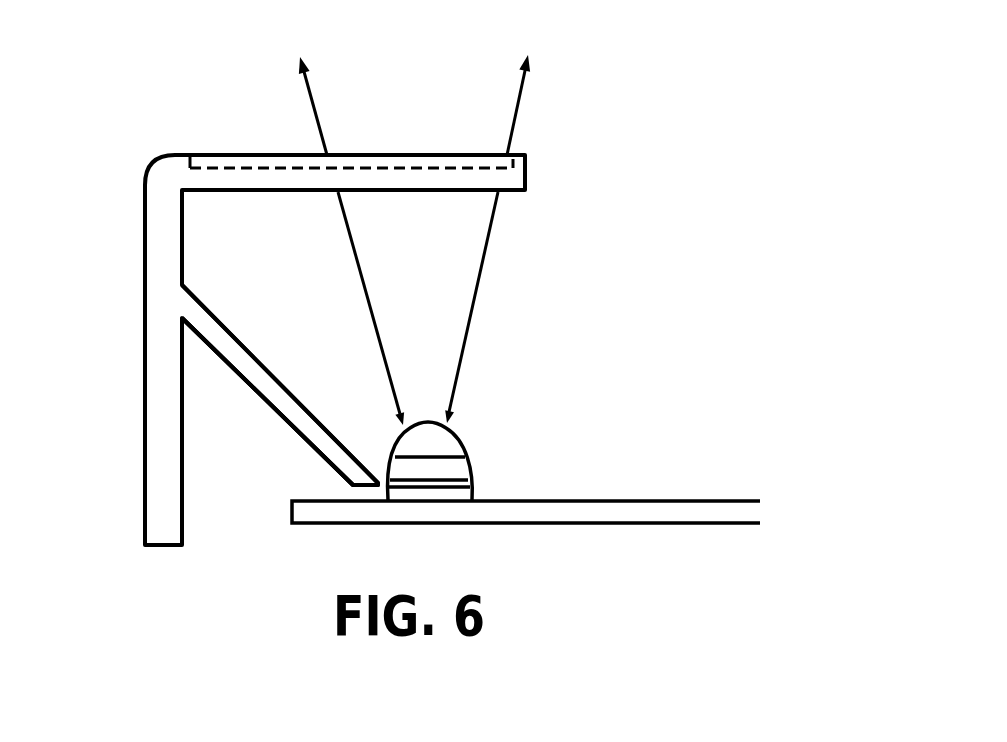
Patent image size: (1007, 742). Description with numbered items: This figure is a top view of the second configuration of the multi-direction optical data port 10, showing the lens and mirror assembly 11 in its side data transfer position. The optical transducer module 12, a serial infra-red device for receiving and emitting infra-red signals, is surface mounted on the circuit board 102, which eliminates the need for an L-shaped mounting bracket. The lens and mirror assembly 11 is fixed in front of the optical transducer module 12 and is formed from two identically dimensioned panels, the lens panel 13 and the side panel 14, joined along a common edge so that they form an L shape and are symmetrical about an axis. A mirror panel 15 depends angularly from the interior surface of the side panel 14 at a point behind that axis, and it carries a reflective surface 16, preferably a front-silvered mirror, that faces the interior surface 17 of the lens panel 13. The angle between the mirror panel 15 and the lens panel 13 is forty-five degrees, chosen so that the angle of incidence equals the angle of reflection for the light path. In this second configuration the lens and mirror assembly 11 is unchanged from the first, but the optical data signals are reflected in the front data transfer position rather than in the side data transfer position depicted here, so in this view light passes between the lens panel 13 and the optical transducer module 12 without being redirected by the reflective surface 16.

The multi-direction optical data port 10 is at (650, 245).
The lens and mirror assembly 11 is at (135, 232).
The optical transducer module 12 is at (462, 468).
The lens panel 13 is at (420, 156).
The side panel 14 is at (145, 405).
The mirror panel 15 is at (265, 401).
The reflective surface 16 is at (255, 352).
The interior surface of lens panel 17 is at (390, 195).
The circuit board 102 is at (638, 523).